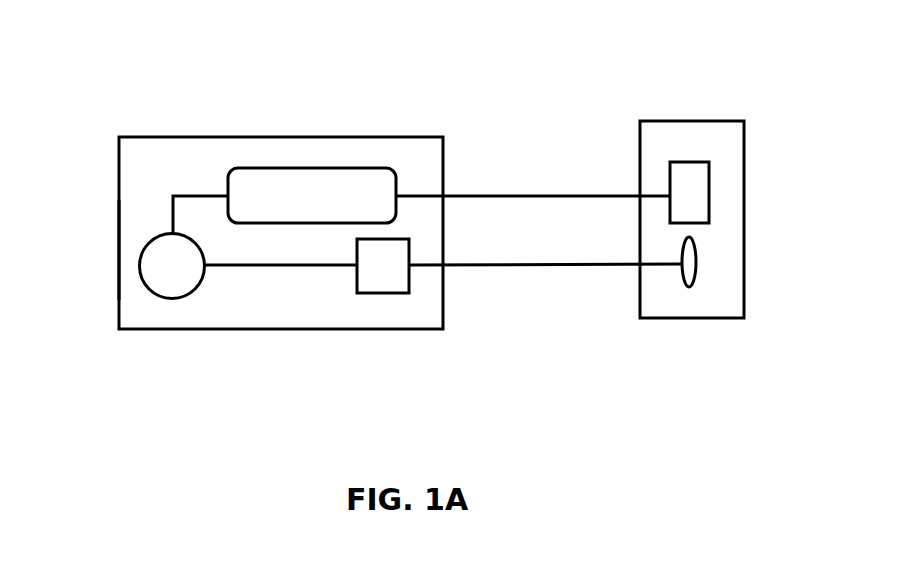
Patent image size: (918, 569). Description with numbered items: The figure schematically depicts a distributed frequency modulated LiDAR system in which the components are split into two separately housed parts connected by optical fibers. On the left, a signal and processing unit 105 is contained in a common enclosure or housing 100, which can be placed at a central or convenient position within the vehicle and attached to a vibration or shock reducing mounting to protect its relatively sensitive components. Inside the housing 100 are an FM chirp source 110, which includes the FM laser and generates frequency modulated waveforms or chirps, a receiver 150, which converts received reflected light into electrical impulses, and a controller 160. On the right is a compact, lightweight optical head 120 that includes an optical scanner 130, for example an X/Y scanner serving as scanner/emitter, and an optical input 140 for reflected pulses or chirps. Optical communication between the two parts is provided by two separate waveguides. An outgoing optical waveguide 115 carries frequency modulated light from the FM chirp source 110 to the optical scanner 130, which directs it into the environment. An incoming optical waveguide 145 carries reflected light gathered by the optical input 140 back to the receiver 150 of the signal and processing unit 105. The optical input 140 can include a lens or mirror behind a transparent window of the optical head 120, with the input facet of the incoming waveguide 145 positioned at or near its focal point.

The housing 100 is at (119, 235).
The signal and processing unit 105 is at (107, 127).
The FM chirp source 110 is at (313, 168).
The outgoing optical waveguide 115 is at (558, 192).
The optical head 120 is at (660, 100).
The optical scanner 130 is at (709, 162).
The optical input 140 is at (695, 287).
The incoming optical waveguide 145 is at (520, 264).
The receiver 150 is at (373, 293).
The controller 160 is at (177, 300).